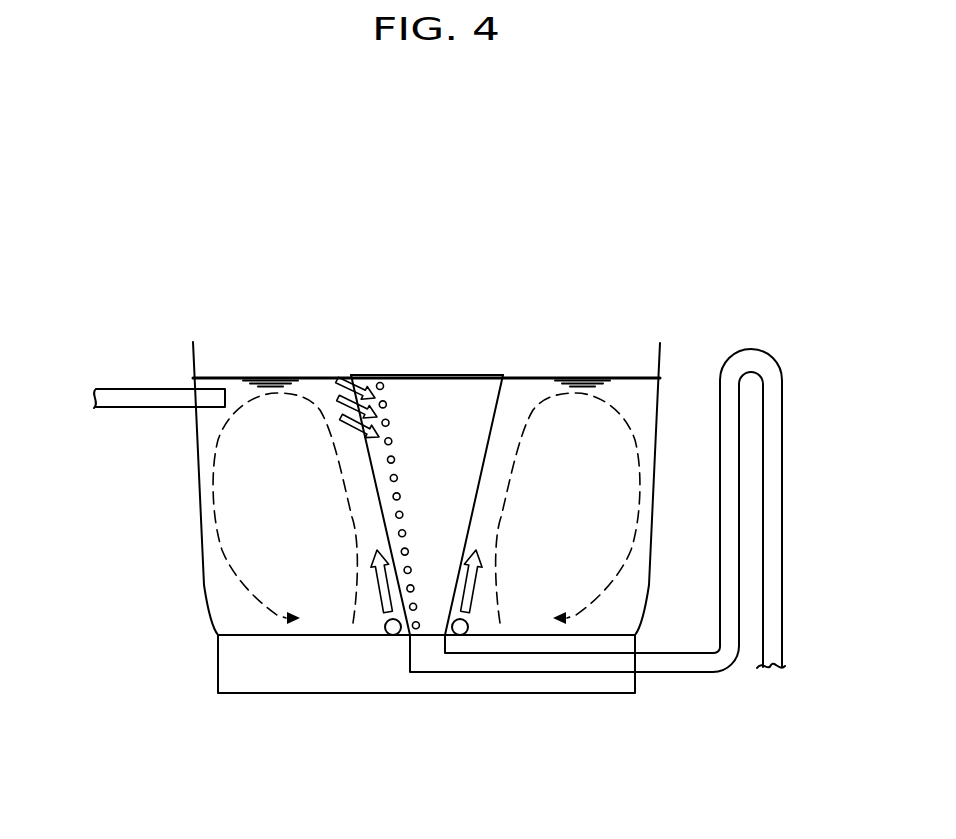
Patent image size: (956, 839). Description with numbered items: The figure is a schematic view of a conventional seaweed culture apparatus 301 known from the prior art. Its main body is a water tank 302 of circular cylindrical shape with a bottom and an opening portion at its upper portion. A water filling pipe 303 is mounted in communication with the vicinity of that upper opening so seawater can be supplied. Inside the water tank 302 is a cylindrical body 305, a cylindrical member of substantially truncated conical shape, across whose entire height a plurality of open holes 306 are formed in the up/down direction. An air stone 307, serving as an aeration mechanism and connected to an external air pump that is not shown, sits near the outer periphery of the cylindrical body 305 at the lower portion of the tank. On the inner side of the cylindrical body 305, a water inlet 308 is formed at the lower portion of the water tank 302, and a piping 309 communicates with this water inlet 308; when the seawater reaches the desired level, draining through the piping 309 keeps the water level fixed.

The seaweed culture apparatus 301 is at (570, 352).
The water tank 302 is at (225, 600).
The water filling pipe 303 is at (157, 393).
The cylindrical body 305 is at (440, 373).
The open holes 306 is at (373, 375).
The air stone 307 is at (458, 633).
The water inlet 308 is at (432, 636).
The piping 309 is at (673, 662).